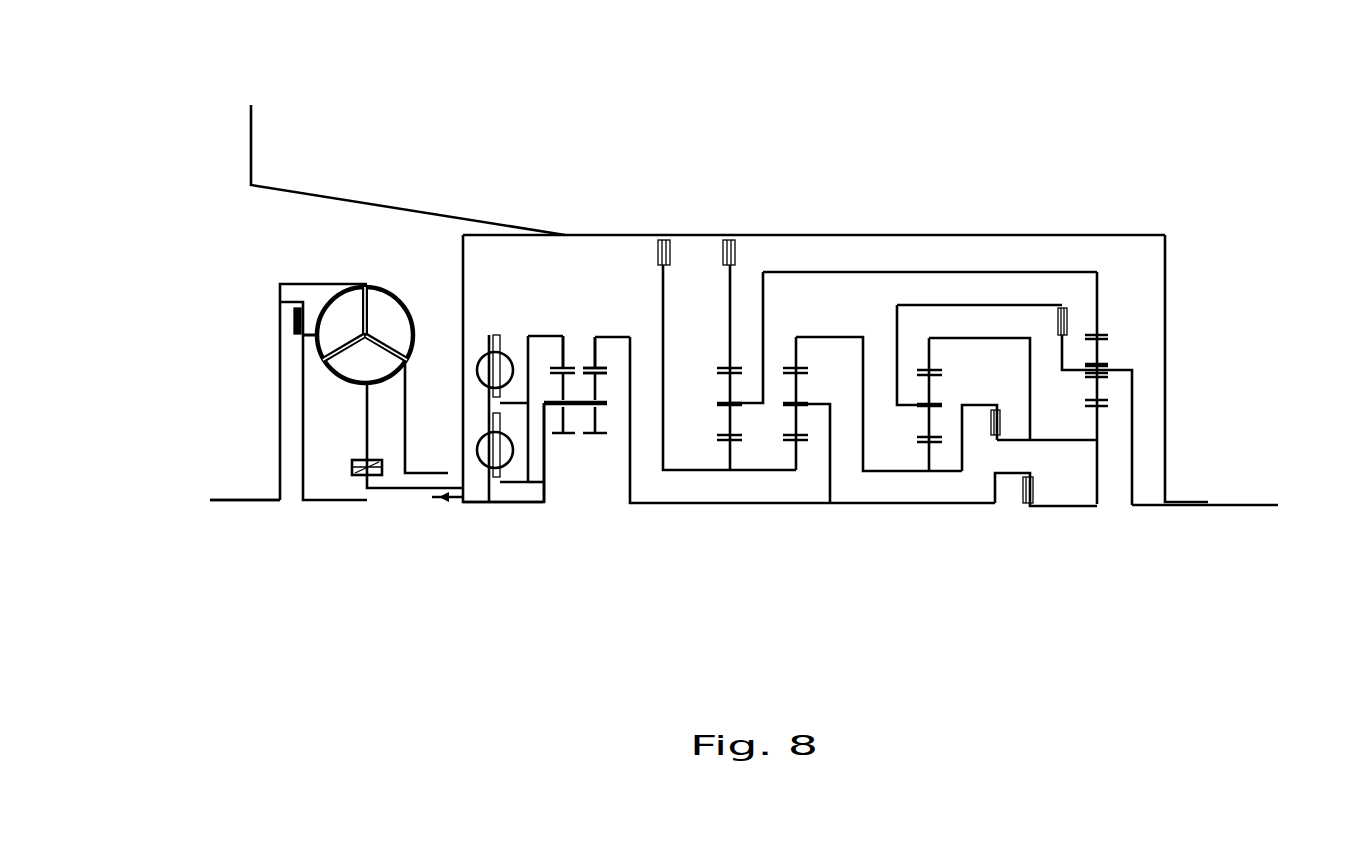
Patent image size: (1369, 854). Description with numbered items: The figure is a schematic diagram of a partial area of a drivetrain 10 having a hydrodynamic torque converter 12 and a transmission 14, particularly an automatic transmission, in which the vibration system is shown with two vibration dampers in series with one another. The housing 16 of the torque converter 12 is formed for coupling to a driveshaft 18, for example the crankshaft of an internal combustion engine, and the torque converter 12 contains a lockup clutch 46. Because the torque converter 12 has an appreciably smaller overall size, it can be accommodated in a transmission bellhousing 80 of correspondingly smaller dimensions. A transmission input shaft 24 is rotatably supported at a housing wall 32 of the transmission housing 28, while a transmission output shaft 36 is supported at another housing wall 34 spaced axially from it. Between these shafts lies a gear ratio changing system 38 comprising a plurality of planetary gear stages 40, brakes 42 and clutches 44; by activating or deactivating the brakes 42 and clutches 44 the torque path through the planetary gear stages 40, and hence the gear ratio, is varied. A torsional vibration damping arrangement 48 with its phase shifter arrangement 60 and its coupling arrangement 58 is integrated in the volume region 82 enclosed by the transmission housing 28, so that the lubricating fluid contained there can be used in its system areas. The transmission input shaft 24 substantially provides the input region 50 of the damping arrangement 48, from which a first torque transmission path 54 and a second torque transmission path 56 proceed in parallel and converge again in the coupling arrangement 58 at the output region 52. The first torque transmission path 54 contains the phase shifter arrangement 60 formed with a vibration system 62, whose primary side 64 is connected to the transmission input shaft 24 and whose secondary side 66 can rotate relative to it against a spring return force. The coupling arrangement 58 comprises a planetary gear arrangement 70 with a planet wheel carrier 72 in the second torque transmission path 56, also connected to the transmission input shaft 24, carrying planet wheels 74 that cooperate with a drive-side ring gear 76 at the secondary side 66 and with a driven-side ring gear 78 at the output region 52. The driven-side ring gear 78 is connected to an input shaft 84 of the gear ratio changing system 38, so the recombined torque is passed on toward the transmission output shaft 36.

The drivetrain 10 is at (348, 592).
The hydrodynamic torque converter 12 is at (258, 532).
The transmission 14 is at (1030, 625).
The housing 16 is at (280, 318).
The driveshaft 18 is at (235, 500).
The transmission input shaft 24 is at (405, 503).
The transmission housing 28 is at (965, 235).
The housing wall 32 is at (463, 270).
The housing wall 34 is at (1170, 377).
The transmission output shaft 36 is at (1250, 506).
The gear ratio changing system 38 is at (905, 228).
The planetary gear stages 40 is at (740, 383).
The brakes 42 is at (663, 232).
The clutches 44 is at (1072, 322).
The lockup clutch 46 is at (293, 340).
The torsional vibration damping arrangement 48 is at (580, 268).
The input region 50 is at (512, 528).
The output region 52 is at (632, 476).
The first torque transmission path 54 is at (473, 402).
The second torque transmission path 56 is at (533, 523).
The coupling arrangement 58 is at (585, 325).
The phase shifter arrangement 60 is at (493, 288).
The vibration system 62 is at (488, 340).
The primary side 64 is at (480, 457).
The secondary side 66 is at (533, 462).
The planetary gear arrangement 70 is at (543, 457).
The planet wheel carrier 72 is at (592, 465).
The planet wheels 74 is at (600, 422).
The drive-side ring gear 76 is at (560, 353).
The driven-side ring gear 78 is at (600, 357).
The transmission bellhousing 80 is at (303, 183).
The volume region 82 is at (1028, 255).
The input shaft of the gear ratio changing system 84 is at (868, 505).